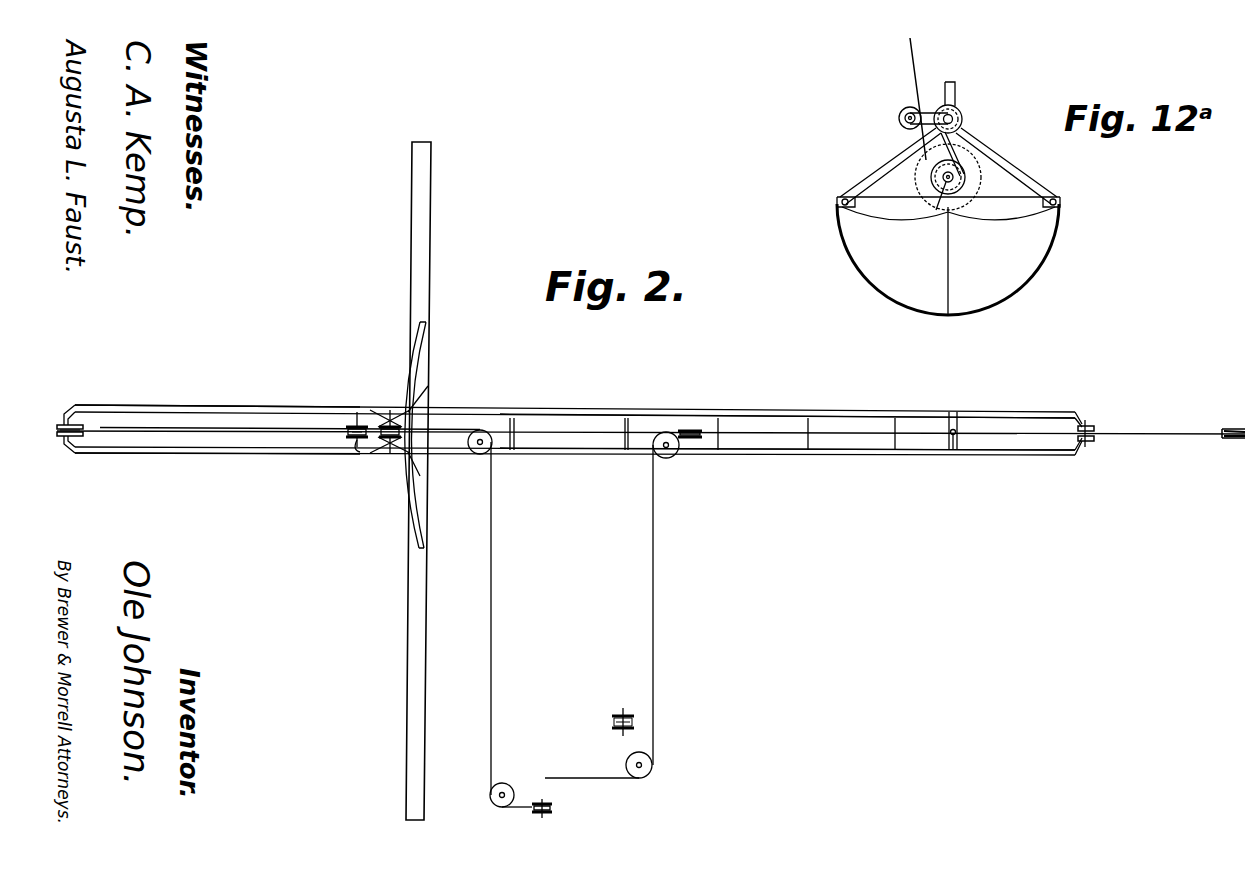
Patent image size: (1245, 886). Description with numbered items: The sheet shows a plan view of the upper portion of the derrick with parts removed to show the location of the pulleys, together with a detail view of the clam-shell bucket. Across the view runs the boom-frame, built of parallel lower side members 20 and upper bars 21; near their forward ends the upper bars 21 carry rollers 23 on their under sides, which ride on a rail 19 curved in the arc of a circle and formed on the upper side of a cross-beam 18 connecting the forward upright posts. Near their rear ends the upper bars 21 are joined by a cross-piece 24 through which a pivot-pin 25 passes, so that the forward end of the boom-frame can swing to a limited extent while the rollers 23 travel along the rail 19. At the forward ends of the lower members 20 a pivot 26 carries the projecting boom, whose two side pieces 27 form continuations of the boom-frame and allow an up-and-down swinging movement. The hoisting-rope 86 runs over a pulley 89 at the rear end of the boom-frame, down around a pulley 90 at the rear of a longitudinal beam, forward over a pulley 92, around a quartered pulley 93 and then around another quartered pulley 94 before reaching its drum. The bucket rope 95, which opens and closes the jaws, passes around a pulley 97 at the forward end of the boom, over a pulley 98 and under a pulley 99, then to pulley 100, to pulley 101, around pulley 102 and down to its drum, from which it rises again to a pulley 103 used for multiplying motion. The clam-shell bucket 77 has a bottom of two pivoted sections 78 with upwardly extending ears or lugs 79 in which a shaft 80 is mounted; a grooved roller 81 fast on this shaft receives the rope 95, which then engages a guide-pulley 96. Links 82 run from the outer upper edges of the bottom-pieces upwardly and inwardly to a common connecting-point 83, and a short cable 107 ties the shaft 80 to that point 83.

In FIG. 2, the cross-beam 18 is at (430, 230).
In FIG. 2, the rail 19 is at (421, 340).
In FIG. 2, the side member 20 is at (795, 452).
In FIG. 2, the upper bar 21 is at (760, 412).
In FIG. 2, the roller 23 is at (424, 392).
In FIG. 2, the cross-piece 24 is at (958, 414).
In FIG. 2, the pivot-pin 25 is at (953, 454).
In FIG. 2, the pivot 26 is at (358, 446).
In FIG. 2, the side piece 27 is at (299, 408).
In FIG. 12a, the clam-shell bucket 77 is at (1060, 222).
In FIG. 12a, the pivoted bottom section 78 is at (857, 253).
In FIG. 12a, the ear or lug 79 is at (977, 177).
In FIG. 12a, the shaft 80 is at (946, 182).
In FIG. 12a, the grooved roller 81 is at (985, 185).
In FIG. 12a, the link 82 is at (888, 164).
In FIG. 12a, the connecting-point 83 is at (958, 118).
In FIG. 2, the hoisting-rope 86 is at (654, 620).
In FIG. 2, the pulley 89 is at (1089, 427).
In FIG. 2, the pulley 90 is at (1232, 440).
In FIG. 2, the pulley 92 is at (693, 428).
In FIG. 2, the quartered pulley 93 is at (667, 458).
In FIG. 2, the quartered pulley 94 is at (652, 767).
In FIG. 2, the bucket rope 95 is at (492, 600).
In FIG. 12a, the bucket rope 95 is at (912, 62).
In FIG. 12a, the guide-pulley 96 is at (901, 116).
In FIG. 2, the pulley 97 is at (61, 414).
In FIG. 2, the pulley 98 is at (355, 425).
In FIG. 2, the pulley 99 is at (390, 424).
In FIG. 2, the pulley 100 is at (481, 432).
In FIG. 2, the pulley 101 is at (503, 790).
In FIG. 2, the pulley 102 is at (551, 809).
In FIG. 2, the pulley 103 is at (613, 728).
In FIG. 12a, the short cable 107 is at (958, 142).